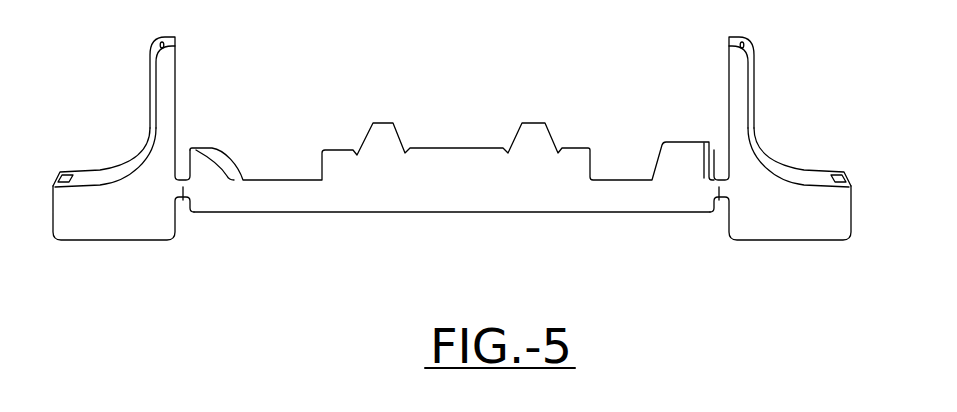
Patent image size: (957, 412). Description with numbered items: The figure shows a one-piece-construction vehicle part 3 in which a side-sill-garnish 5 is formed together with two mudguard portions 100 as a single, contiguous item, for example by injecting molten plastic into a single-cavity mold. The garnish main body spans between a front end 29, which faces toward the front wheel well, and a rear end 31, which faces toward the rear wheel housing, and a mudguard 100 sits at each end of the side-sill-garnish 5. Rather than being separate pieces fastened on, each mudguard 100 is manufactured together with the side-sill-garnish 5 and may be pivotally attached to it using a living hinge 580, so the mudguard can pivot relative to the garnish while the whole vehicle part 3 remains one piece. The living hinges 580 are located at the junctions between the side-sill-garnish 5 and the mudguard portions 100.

The one-piece-construction vehicle part 3 is at (486, 224).
The side-sill-garnish portion 5 is at (576, 200).
The front end 29 is at (222, 156).
The rear end 31 is at (707, 142).
The mudguard portion 100 is at (93, 221).
The living hinge 580 is at (183, 200).